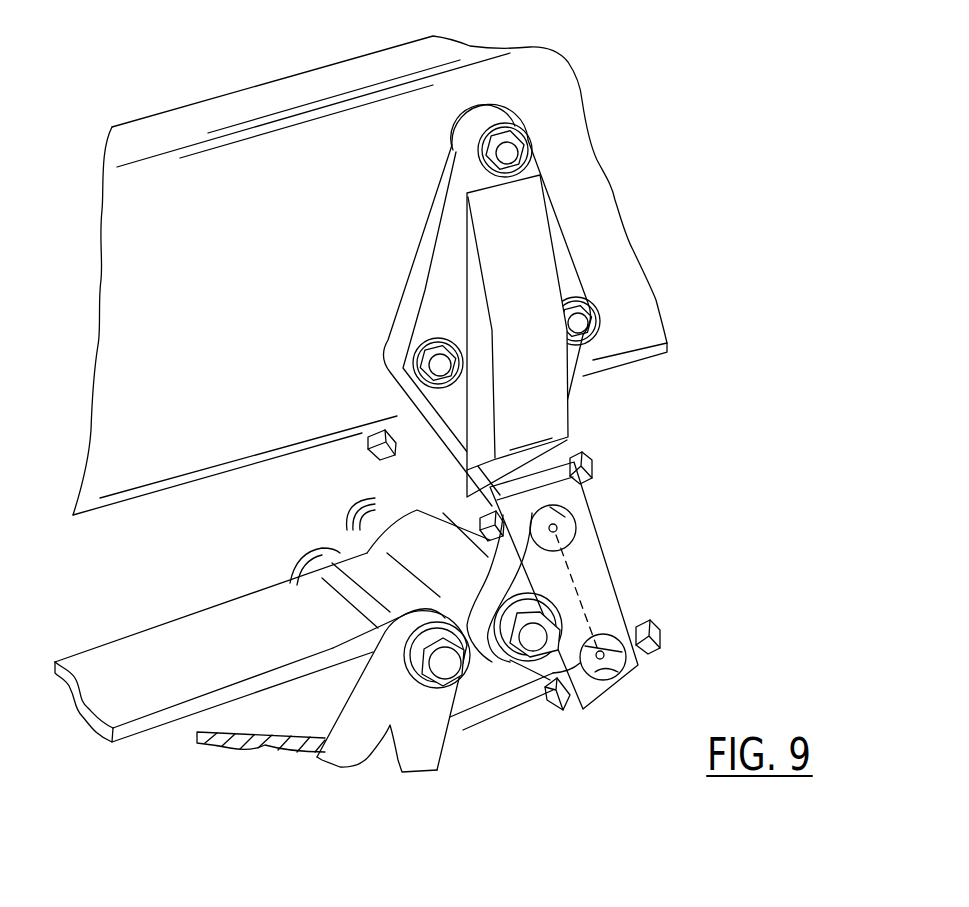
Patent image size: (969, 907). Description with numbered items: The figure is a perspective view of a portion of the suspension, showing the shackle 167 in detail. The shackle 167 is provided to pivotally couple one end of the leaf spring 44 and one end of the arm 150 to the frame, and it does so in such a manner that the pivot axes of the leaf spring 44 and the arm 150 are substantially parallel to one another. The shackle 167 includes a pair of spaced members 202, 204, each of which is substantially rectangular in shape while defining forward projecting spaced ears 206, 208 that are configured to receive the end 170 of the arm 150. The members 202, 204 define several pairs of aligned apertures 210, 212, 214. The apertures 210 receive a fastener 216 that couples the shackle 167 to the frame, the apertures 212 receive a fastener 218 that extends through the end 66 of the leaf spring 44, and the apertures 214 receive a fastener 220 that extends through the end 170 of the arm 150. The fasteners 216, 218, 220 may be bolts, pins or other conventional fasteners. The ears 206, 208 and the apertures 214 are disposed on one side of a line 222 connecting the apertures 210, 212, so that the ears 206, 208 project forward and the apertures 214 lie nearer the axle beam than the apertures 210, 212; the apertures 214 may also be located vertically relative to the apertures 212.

The leaf spring 44 is at (473, 720).
The end of leaf spring 66 is at (540, 716).
The arm 150 is at (155, 594).
The shackle 167 is at (605, 589).
The end of arm 170 is at (372, 533).
The member 202 is at (585, 555).
The member 204 is at (378, 470).
The ear 206 is at (523, 577).
The ear 208 is at (375, 508).
The aperture 210 is at (580, 498).
The aperture 212 is at (627, 673).
The aperture 214 is at (553, 613).
The fastener 216 is at (568, 525).
The fastener 218 is at (660, 643).
The fastener 220 is at (533, 640).
The line 222 is at (600, 622).